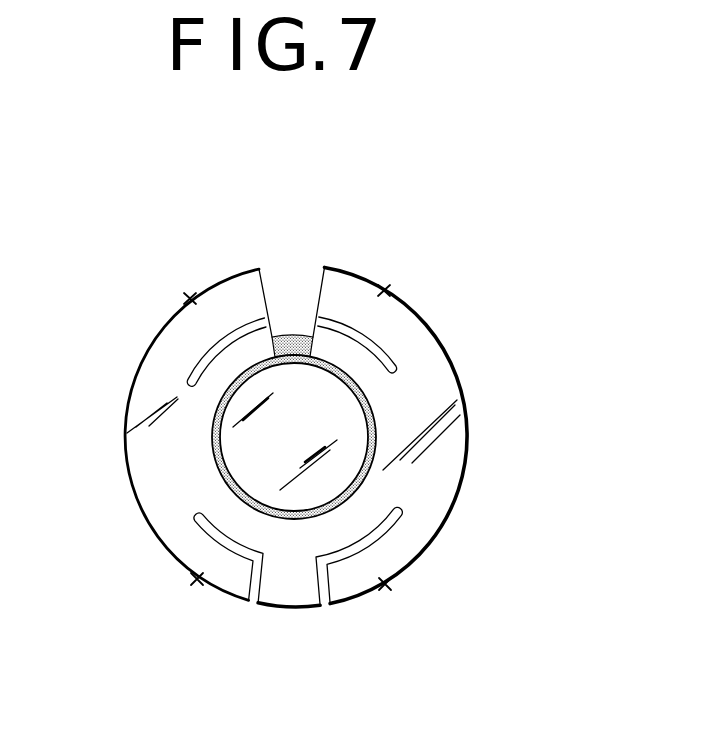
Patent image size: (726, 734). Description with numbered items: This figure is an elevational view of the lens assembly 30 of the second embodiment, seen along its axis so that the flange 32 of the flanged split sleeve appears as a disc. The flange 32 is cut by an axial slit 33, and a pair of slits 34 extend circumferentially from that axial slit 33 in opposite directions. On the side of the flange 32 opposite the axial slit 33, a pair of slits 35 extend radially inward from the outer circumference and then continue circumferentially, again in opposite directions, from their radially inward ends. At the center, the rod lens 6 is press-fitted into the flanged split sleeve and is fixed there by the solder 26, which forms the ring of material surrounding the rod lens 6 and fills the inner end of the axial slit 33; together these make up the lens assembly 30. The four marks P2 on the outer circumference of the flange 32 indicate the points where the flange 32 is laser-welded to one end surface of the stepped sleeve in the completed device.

The rod lens 6 is at (258, 440).
The solder 26 is at (296, 333).
The lens assembly 30 is at (462, 389).
The flange 32 is at (467, 415).
The axial slit 33 is at (265, 278).
The pair of slits 34 is at (190, 376).
The pair of slits 35 is at (197, 520).
The welding points P2 is at (190, 299).